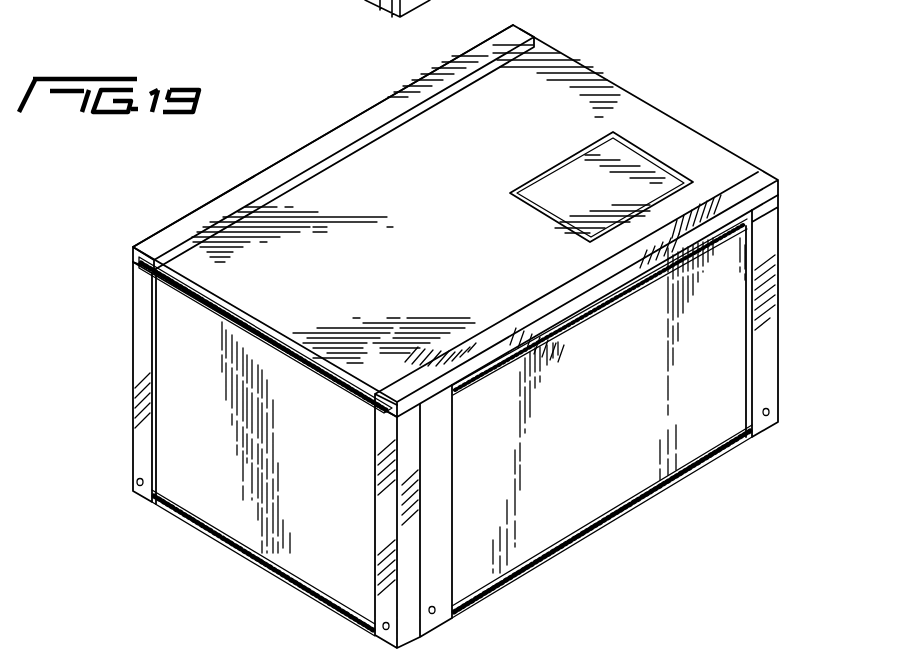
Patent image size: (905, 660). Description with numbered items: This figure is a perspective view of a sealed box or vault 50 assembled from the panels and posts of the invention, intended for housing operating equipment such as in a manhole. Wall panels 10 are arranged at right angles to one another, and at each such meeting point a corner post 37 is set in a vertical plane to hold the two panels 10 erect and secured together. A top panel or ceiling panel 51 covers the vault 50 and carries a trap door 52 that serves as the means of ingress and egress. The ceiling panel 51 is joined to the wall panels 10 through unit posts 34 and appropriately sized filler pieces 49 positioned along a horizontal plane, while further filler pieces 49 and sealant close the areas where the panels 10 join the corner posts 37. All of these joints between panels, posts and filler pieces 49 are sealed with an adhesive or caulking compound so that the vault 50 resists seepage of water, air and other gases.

The panel 10 is at (235, 505).
The unit post 34 is at (290, 160).
The corner post 37 is at (777, 307).
The filler piece 49 is at (262, 338).
The vault 50 is at (607, 16).
The ceiling panel 51 is at (610, 110).
The trap door 52 is at (627, 157).